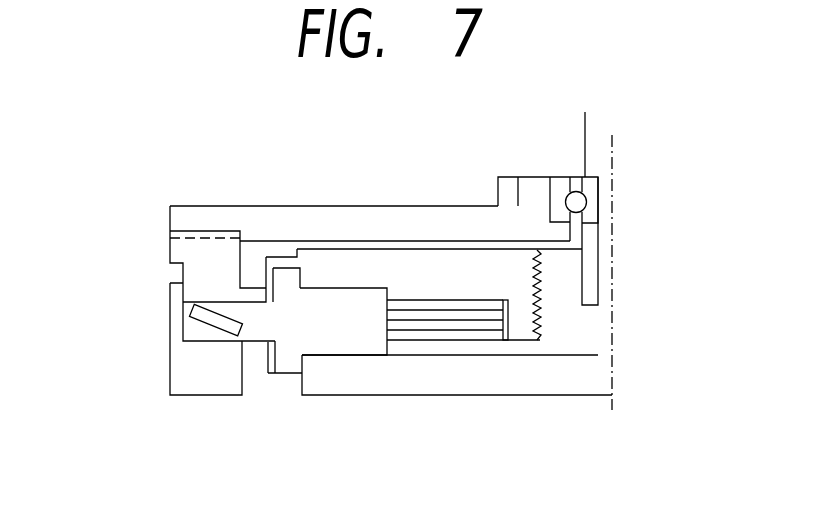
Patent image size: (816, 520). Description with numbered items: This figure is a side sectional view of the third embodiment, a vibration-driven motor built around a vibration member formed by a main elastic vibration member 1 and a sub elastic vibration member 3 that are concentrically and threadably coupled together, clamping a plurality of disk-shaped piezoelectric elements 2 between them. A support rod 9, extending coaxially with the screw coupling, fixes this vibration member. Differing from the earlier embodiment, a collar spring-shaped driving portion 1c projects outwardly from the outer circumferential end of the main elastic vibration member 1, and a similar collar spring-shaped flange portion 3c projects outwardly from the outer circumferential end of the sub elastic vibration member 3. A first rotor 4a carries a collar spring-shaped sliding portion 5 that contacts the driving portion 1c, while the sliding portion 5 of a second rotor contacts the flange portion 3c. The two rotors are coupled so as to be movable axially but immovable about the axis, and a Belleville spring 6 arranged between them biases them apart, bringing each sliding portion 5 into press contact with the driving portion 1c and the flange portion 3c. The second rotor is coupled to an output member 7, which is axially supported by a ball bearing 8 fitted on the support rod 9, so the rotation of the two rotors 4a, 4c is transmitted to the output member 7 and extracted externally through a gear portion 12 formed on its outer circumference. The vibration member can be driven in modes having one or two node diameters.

The main elastic vibration member 1 is at (365, 380).
The collar spring-shaped driving portion 1c is at (283, 380).
The piezoelectric elements 2 is at (455, 320).
The sub elastic vibration member 3 is at (346, 265).
The collar spring-shaped flange portion 3c is at (290, 258).
The first rotor 4a is at (217, 375).
The rotor 4c is at (182, 256).
The collar spring-shaped sliding portion 5 is at (263, 277).
The Belleville spring 6 is at (196, 323).
The output member 7 is at (422, 215).
The ball bearing 8 is at (557, 185).
The support rod 9 is at (605, 265).
The gear portion 12 is at (510, 183).